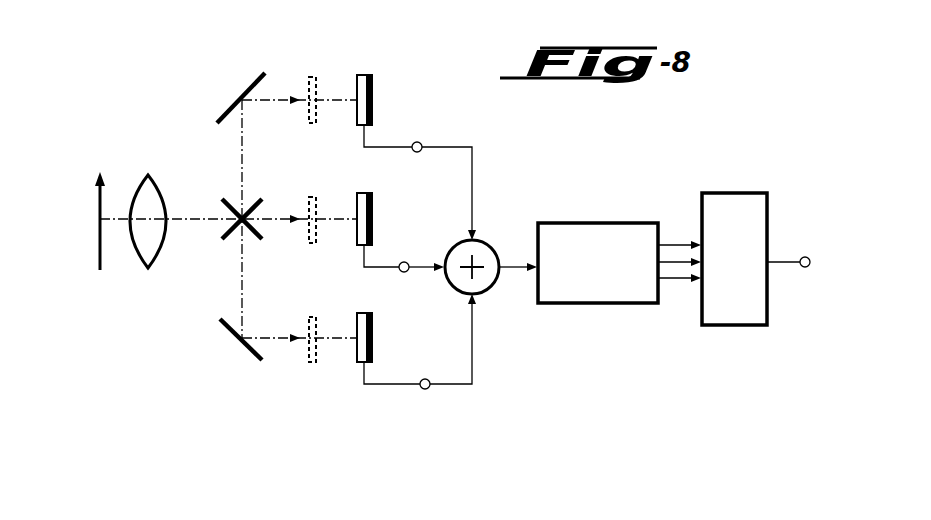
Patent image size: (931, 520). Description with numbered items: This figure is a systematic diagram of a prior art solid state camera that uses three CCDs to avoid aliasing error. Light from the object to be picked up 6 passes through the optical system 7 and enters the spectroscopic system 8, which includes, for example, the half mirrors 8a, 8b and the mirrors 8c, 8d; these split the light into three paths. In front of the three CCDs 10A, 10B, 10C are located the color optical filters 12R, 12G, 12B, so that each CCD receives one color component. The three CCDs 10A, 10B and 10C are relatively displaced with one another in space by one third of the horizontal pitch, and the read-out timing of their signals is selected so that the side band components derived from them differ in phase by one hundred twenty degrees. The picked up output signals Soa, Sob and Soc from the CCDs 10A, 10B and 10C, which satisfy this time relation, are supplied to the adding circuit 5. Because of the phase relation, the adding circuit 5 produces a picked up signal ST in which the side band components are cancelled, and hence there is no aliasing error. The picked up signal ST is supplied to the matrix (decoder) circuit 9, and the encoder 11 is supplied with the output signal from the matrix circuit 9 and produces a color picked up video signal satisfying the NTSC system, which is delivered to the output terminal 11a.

The adding circuit 5 is at (491, 246).
The object to be picked up 6 is at (100, 270).
The optical system 7 is at (148, 270).
The spectroscopic system 8 is at (197, 181).
The half mirror 8a is at (256, 205).
The half mirror 8b is at (256, 233).
The mirror 8c is at (250, 84).
The mirror 8d is at (246, 346).
The matrix (decoder) circuit 9 is at (605, 222).
The CCD 10A is at (364, 75).
The CCD 10B is at (372, 196).
The CCD 10C is at (372, 328).
The encoder 11 is at (735, 192).
The output terminal 11a is at (805, 268).
The color optical filter 12R is at (314, 78).
The color optical filter 12G is at (314, 198).
The color optical filter 12B is at (313, 363).
The picked up output signal Soa is at (458, 147).
The picked up output signal Sob is at (418, 268).
The picked up output signal Soc is at (474, 362).
The picked up signal ST is at (515, 272).